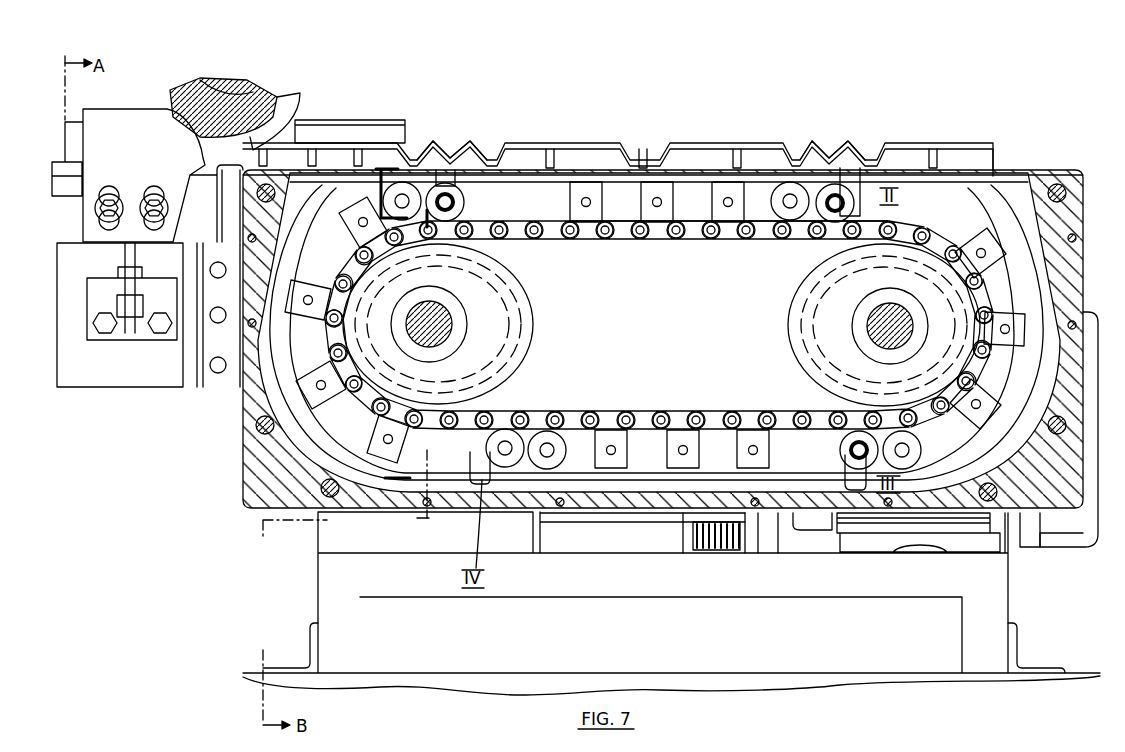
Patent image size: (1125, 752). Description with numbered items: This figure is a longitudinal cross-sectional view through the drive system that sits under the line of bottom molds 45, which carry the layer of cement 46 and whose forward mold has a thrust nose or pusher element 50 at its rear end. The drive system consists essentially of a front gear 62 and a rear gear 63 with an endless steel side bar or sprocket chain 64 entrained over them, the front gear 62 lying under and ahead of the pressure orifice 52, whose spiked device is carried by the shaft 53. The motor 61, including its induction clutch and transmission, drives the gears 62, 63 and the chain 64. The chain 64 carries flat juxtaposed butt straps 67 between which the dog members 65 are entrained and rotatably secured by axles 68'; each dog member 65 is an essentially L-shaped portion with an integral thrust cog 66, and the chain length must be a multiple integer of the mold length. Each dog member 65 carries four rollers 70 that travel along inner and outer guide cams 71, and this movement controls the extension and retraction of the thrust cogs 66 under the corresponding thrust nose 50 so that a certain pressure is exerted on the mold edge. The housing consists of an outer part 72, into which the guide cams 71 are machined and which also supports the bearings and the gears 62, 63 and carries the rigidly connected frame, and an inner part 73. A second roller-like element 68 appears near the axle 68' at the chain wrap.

The bottom molds 45 is at (606, 142).
The layer of cement 46 is at (335, 132).
The thrust nose or pusher element 50 is at (446, 160).
The pressure orifice 52 is at (148, 145).
The shaft 53 is at (283, 112).
The motor 61 is at (815, 528).
The front gear 62 is at (520, 292).
The rear gear 63 is at (805, 292).
The endless chain 64 is at (716, 414).
The dog members 65 is at (408, 182).
The thrust cog 66 is at (452, 183).
The butt straps 67 is at (688, 200).
The tension roller 68 is at (669, 258).
The axles 68' is at (677, 282).
The rollers 70 is at (503, 172).
The guide cams 71 is at (385, 180).
The outer part 72 is at (985, 215).
The inner part 73 is at (1022, 205).